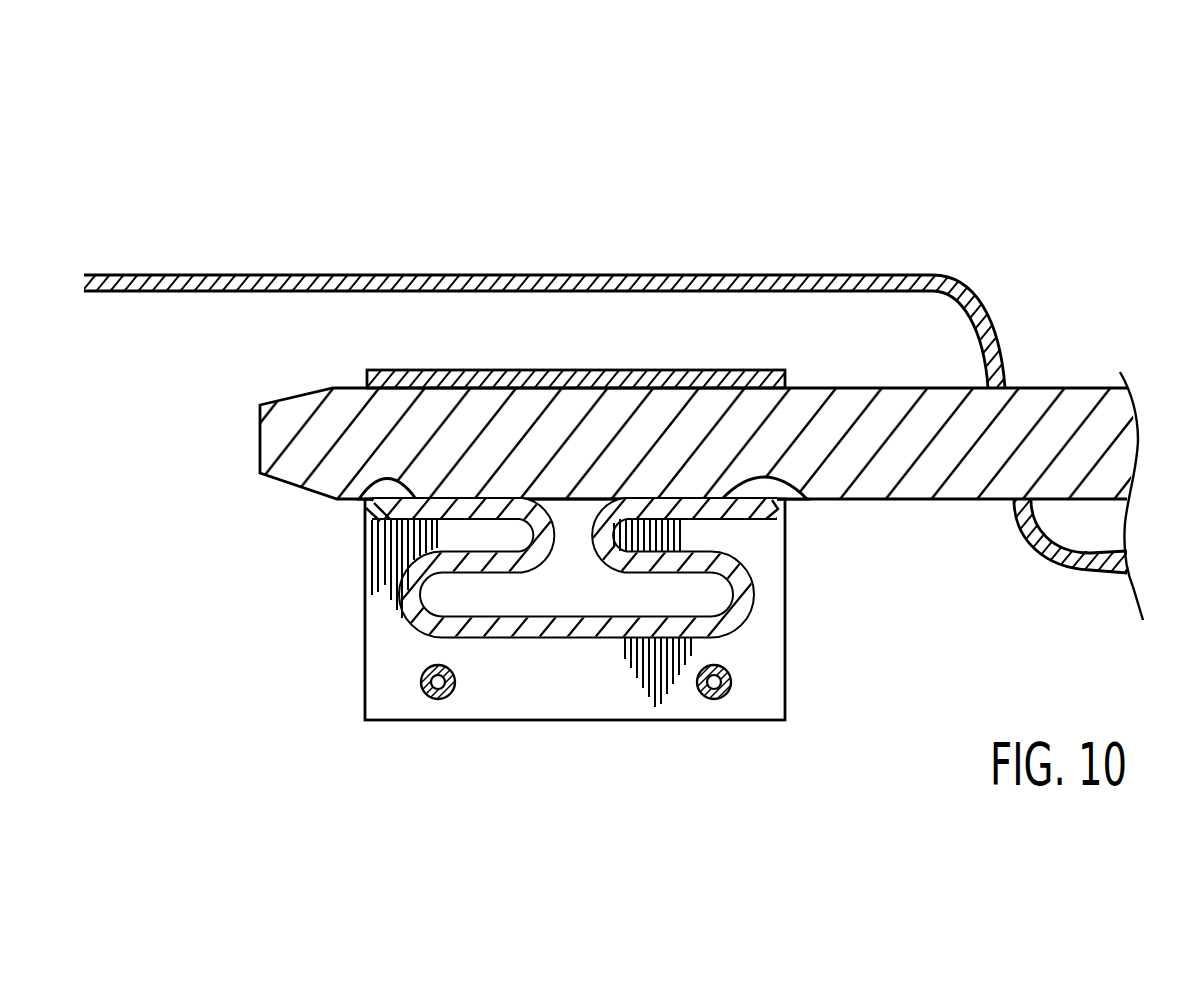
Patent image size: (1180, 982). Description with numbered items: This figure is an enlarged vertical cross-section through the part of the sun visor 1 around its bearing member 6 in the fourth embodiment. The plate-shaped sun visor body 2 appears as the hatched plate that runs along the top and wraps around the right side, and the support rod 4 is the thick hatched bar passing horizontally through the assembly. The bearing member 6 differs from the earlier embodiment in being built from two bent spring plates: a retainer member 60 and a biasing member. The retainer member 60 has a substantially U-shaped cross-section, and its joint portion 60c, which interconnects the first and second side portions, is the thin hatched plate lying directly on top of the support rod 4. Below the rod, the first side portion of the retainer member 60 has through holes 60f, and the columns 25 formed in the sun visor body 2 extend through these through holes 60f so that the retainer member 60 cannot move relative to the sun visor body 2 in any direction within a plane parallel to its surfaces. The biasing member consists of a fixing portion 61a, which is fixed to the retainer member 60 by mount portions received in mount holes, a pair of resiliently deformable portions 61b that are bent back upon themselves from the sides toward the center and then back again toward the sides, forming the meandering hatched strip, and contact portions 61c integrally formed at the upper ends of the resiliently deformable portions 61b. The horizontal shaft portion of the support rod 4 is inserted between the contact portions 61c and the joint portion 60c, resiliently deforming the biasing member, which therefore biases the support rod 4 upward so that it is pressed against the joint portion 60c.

The sun visor 1 is at (192, 128).
The sun visor body 2 is at (217, 273).
The support rod 4 is at (1072, 408).
The bearing member 6 is at (418, 326).
The column 25 is at (421, 672).
The retainer member 60 is at (474, 362).
The joint portion 60c is at (655, 374).
The through hole 60f is at (438, 700).
The fixing portion 61a is at (576, 640).
The resiliently deformable portion 61b is at (433, 530).
The contact portion 61c is at (357, 500).